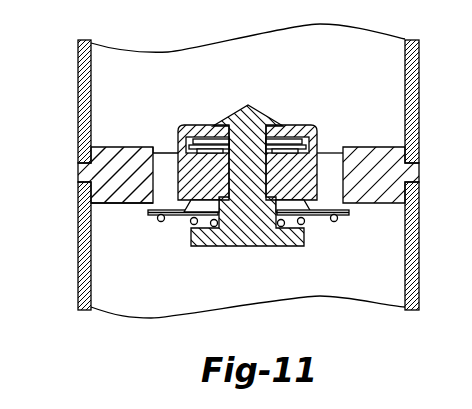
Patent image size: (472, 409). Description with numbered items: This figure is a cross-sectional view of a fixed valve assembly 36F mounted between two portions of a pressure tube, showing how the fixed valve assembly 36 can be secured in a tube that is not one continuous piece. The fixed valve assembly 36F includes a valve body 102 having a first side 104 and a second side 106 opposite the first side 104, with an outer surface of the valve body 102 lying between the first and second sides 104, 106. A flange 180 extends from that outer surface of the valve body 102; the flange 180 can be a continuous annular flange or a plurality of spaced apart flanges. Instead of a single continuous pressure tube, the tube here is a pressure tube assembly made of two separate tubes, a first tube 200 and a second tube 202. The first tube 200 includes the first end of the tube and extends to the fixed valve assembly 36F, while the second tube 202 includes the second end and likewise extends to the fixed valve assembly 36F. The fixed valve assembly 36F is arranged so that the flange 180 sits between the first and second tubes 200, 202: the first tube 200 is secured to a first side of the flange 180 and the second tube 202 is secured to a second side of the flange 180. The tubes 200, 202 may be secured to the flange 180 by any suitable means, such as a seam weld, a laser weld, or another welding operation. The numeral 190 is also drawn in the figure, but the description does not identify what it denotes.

The fixed valve assembly 36 is at (409, 40).
The fixed valve assembly 36F is at (260, 100).
The valve body 102 is at (128, 157).
The first side 104 is at (138, 143).
The second side 106 is at (117, 204).
The flange 180 is at (82, 173).
The right mounting block 190 is at (390, 166).
The first tube 200 is at (77, 50).
The second tube 202 is at (77, 277).